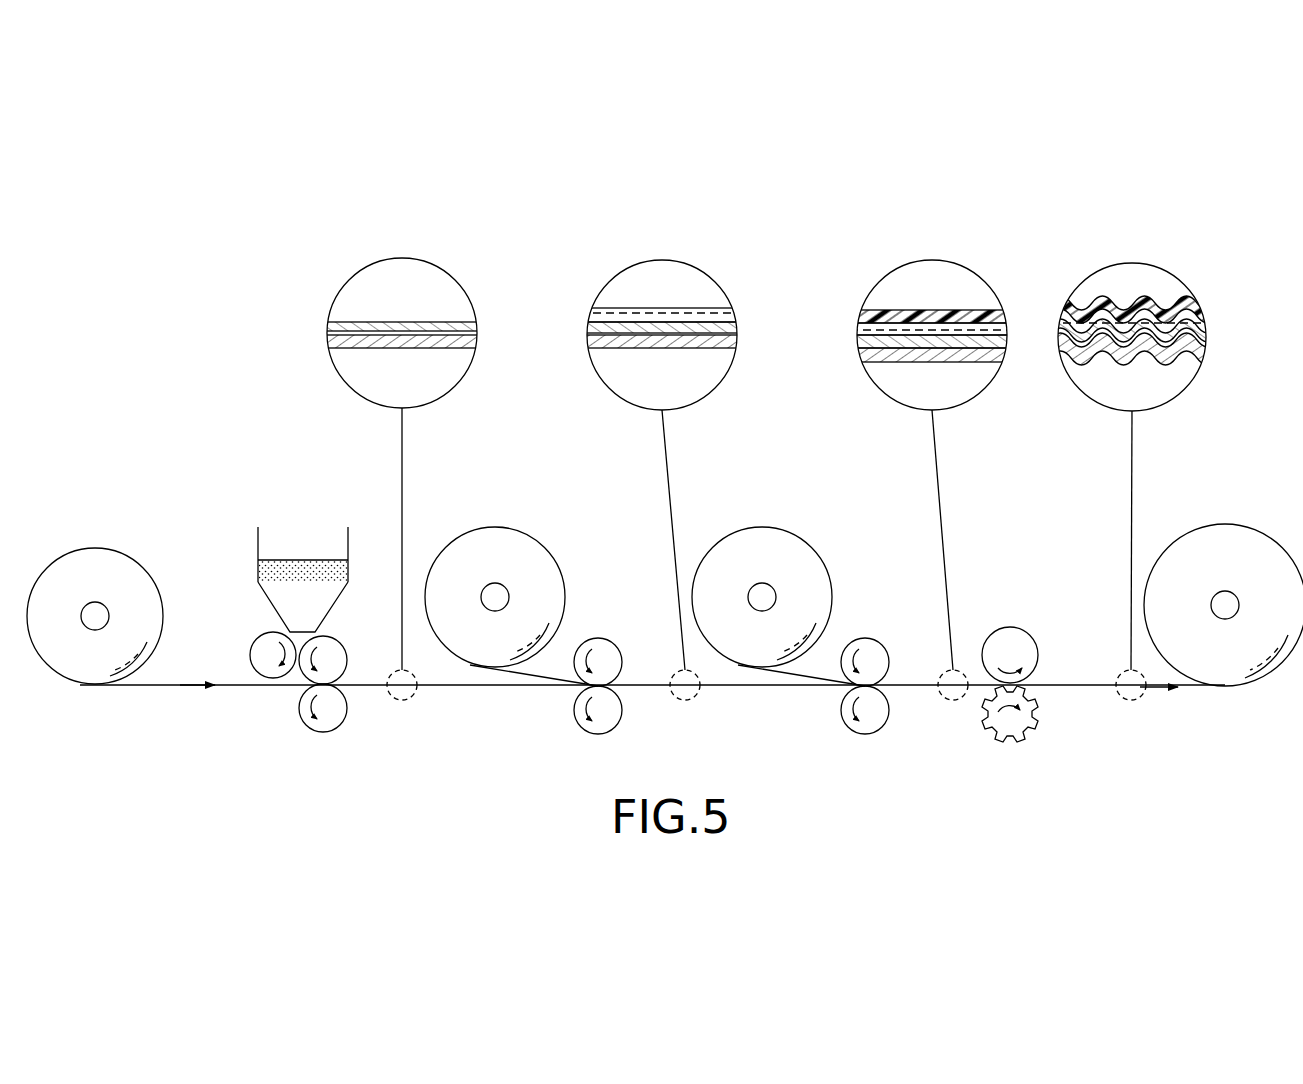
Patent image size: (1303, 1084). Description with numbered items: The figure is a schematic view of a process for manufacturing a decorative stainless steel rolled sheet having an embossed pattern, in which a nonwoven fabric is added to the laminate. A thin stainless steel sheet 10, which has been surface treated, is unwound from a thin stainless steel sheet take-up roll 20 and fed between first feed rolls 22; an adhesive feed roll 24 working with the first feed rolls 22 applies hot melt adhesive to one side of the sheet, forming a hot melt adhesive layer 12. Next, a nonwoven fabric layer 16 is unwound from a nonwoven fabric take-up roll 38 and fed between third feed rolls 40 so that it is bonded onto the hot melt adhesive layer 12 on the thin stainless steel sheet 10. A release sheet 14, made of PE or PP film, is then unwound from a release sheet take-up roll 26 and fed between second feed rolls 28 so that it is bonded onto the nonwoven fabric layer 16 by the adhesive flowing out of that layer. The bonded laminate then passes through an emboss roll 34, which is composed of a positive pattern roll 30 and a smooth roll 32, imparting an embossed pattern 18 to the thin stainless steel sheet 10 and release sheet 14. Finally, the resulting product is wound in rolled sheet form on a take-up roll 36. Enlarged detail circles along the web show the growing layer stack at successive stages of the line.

The thin stainless steel sheet 10 is at (178, 688).
The hot melt adhesive layer 12 is at (375, 322).
The release sheet 14 is at (812, 673).
The nonwoven fabric layer 16 is at (545, 673).
The embossed pattern 18 is at (1152, 347).
The thin stainless steel sheet take-up roll 20 is at (96, 602).
The first feed rolls 22 is at (345, 662).
The adhesive feed roll 24 is at (256, 642).
The release sheet take-up roll 26 is at (765, 585).
The second feed rolls 28 is at (887, 662).
The positive pattern roll 30 is at (1038, 716).
The smooth roll 32 is at (1036, 646).
The emboss roll 34 is at (1020, 630).
The take-up roll 36 is at (1229, 592).
The nonwoven fabric take-up roll 38 is at (500, 585).
The third feed rolls 40 is at (620, 662).